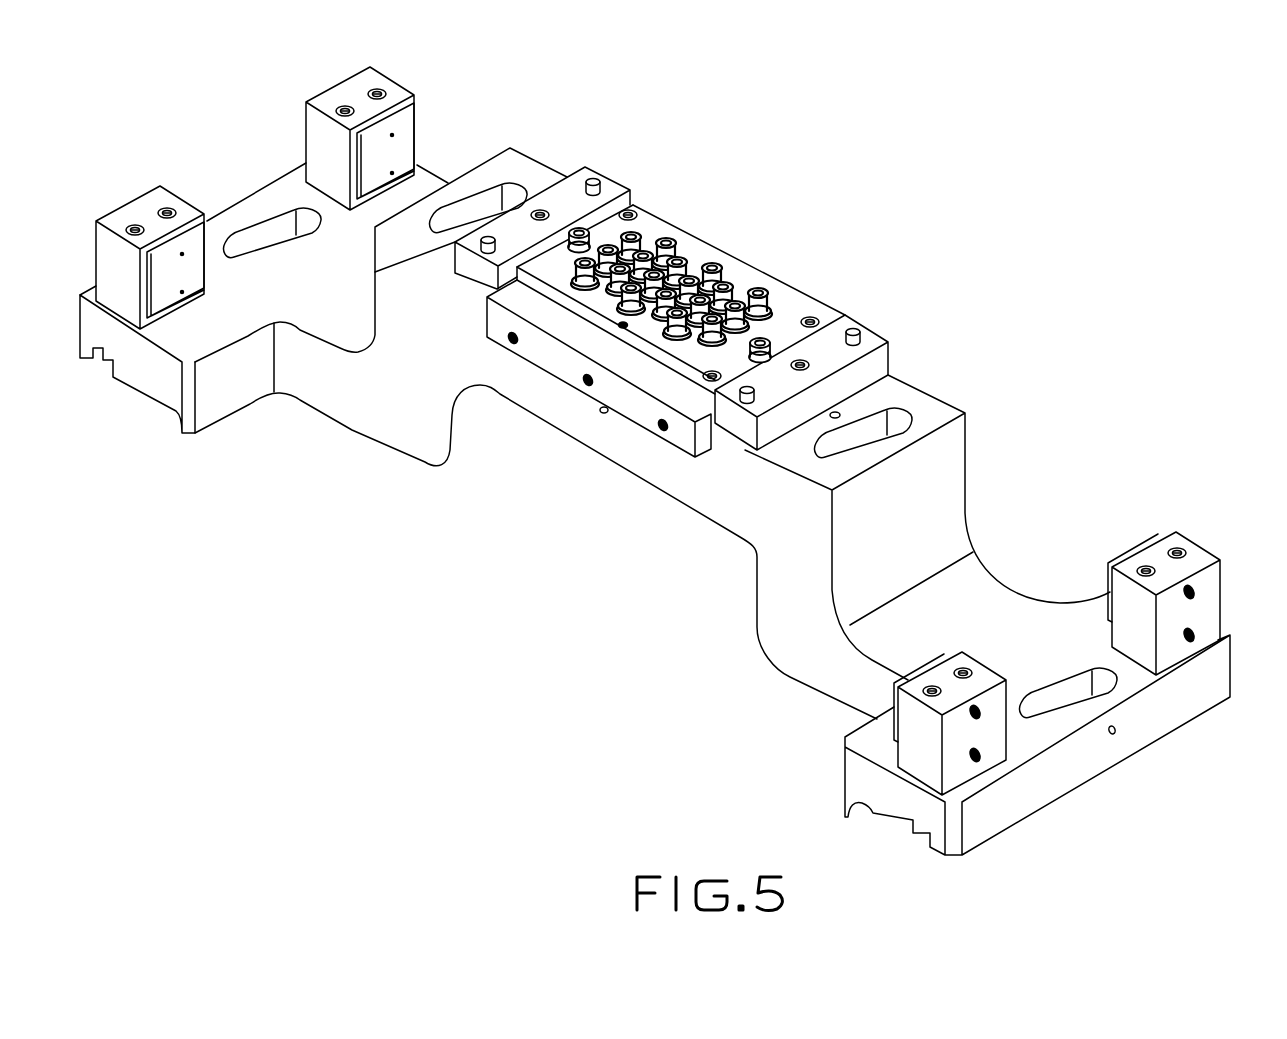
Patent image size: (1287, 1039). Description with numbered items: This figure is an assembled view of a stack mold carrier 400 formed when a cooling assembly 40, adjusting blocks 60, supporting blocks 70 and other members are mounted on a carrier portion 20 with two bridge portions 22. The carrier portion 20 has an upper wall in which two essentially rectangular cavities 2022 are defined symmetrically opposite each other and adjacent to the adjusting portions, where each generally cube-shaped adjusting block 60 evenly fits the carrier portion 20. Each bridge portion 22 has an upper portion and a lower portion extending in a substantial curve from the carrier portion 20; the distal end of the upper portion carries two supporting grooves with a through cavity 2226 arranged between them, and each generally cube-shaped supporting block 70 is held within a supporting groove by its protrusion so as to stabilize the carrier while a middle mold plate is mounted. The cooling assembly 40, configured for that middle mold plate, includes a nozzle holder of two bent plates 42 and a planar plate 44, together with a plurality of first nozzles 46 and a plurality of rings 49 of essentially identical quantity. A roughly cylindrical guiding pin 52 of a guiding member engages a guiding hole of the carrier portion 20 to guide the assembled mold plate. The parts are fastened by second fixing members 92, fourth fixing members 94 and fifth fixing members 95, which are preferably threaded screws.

The carrier portion 20 is at (917, 368).
The bridge portion 22 is at (1127, 765).
The cooling assembly 40 is at (622, 374).
The bent plate 42 is at (548, 362).
The planar plate 44 is at (598, 302).
The first nozzle 46 is at (645, 330).
The ring 49 is at (703, 338).
The guiding pin 52 is at (578, 230).
The adjusting block 60 is at (807, 354).
The supporting block 70 is at (658, 414).
The second fixing member 92 is at (630, 212).
The fourth fixing member 94 is at (800, 360).
The fifth fixing member 95 is at (388, 91).
The stack mold carrier 400 is at (845, 95).
The cavity 2022 is at (898, 414).
The through cavity 2226 is at (1100, 686).